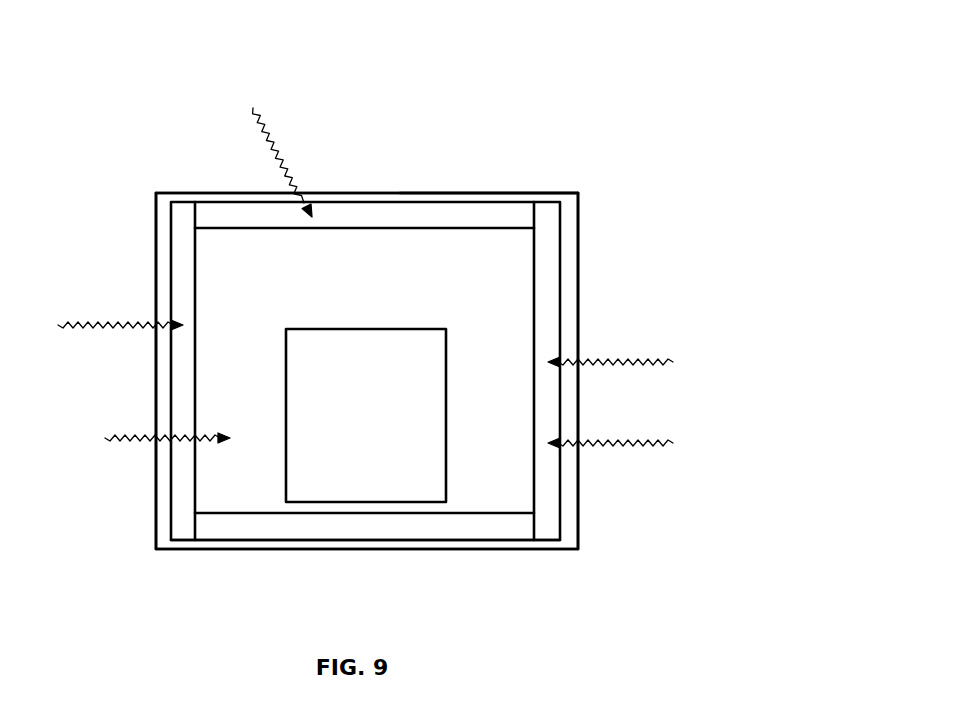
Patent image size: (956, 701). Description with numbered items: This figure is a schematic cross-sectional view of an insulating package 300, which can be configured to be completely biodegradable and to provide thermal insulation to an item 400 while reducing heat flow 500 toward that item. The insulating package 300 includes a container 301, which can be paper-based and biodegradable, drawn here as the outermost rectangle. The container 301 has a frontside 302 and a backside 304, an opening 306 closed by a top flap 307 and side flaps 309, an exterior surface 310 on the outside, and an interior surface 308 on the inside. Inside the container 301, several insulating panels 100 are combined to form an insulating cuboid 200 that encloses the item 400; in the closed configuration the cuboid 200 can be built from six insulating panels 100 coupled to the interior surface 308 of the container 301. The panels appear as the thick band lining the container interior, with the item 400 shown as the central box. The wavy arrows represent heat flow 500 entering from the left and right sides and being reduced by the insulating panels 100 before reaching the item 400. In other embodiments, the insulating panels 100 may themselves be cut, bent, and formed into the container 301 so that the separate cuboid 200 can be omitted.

The insulating panel 100 is at (183, 222).
The insulating cuboid 200 is at (560, 163).
The insulating package 300 is at (620, 90).
The container 301 is at (166, 541).
The frontside 302 is at (509, 163).
The backside 304 is at (227, 575).
The opening 306 is at (367, 119).
The top flap 307 is at (367, 133).
The interior surface 308 is at (166, 493).
The side flaps 309 is at (443, 188).
The exterior surface 310 is at (157, 219).
The item 400 is at (382, 373).
The heat flow 500 is at (77, 322).